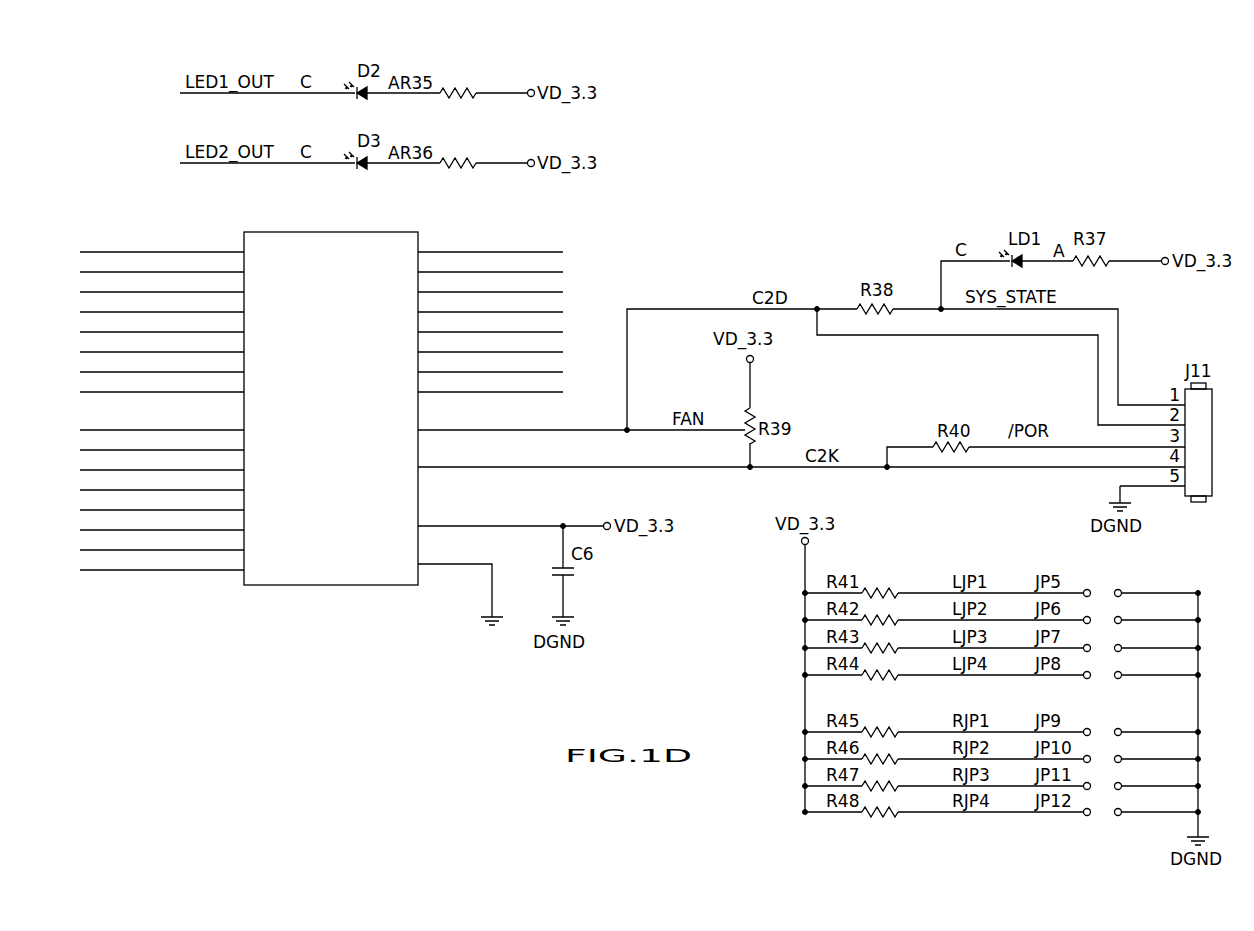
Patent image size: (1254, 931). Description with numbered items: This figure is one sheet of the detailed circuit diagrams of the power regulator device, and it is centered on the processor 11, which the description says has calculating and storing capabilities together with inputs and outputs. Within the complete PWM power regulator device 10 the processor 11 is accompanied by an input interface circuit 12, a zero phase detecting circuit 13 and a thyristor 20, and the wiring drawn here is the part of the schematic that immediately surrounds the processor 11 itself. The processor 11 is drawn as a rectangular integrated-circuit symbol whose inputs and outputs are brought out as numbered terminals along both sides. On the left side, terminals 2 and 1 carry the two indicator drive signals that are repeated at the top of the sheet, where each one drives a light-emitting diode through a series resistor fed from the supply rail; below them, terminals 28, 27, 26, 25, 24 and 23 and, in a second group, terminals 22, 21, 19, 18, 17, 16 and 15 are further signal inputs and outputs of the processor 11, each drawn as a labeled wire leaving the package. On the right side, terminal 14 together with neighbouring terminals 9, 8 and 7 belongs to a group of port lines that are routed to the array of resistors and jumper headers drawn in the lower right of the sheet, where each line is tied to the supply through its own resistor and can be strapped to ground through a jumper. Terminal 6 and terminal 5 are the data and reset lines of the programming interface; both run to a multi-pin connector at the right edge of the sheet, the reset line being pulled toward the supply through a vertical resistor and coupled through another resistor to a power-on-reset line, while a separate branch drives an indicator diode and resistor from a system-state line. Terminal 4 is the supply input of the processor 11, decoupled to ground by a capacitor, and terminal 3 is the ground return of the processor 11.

The processor 11 is at (415, 428).
The U9 pin 1 P0.1 LED2_OUT 1 is at (162, 263).
The U9 pin 2 P0.0/VREF LED1_OUT 2 is at (162, 243).
The U9 pin 3 GND 3 is at (462, 597).
The U9 pin 4 VDD 4 is at (490, 515).
The U9 pin 5 RST#/C2K 5 is at (584, 456).
The U9 pin 6 P3.0/C2D 6 is at (522, 419).
The U9 pin 7 P2.7 RJP4 7 is at (490, 383).
The U9 pin 8 P2.6 RJP3 8 is at (490, 363).
The U9 pin 9 P2.5 PJP2 9 is at (490, 343).
The PWM power regulator device 10 is at (490, 323).
The input interface circuit 12 is at (490, 283).
The zero phase detecting circuit 13 is at (490, 263).
The U9 pin 14 P2.0 LJP1 14 is at (490, 243).
The U9 pin 15 P1.7 TRC3 15 is at (162, 561).
The U9 pin 16 P1.6 TRC2 16 is at (162, 541).
The U9 pin 17 P1.5 TRC1 17 is at (162, 521).
The U9 pin 18 P1.4 CT 18 is at (162, 501).
The U9 pin 19 P1.3 KEYIN 19 is at (162, 481).
The thyristor 20 is at (162, 461).
The U9 pin 21 P1.1 IA1 21 is at (162, 441).
The U9 pin 22 P1.0 IA2 22 is at (162, 421).
The U9 pin 23 P0.7 ZCRS2 23 is at (162, 383).
The U9 pin 24 P0.6/CNVSTR ZCRS 24 is at (162, 363).
The U9 pin 25 P0.5 RXD 25 is at (162, 343).
The U9 pin 26 P0.4 IXD 26 is at (162, 323).
The U9 pin 27 P0.3/X2 RX485 27 is at (162, 303).
The U9 pin 28 P0.2/X1 TX485 28 is at (162, 283).